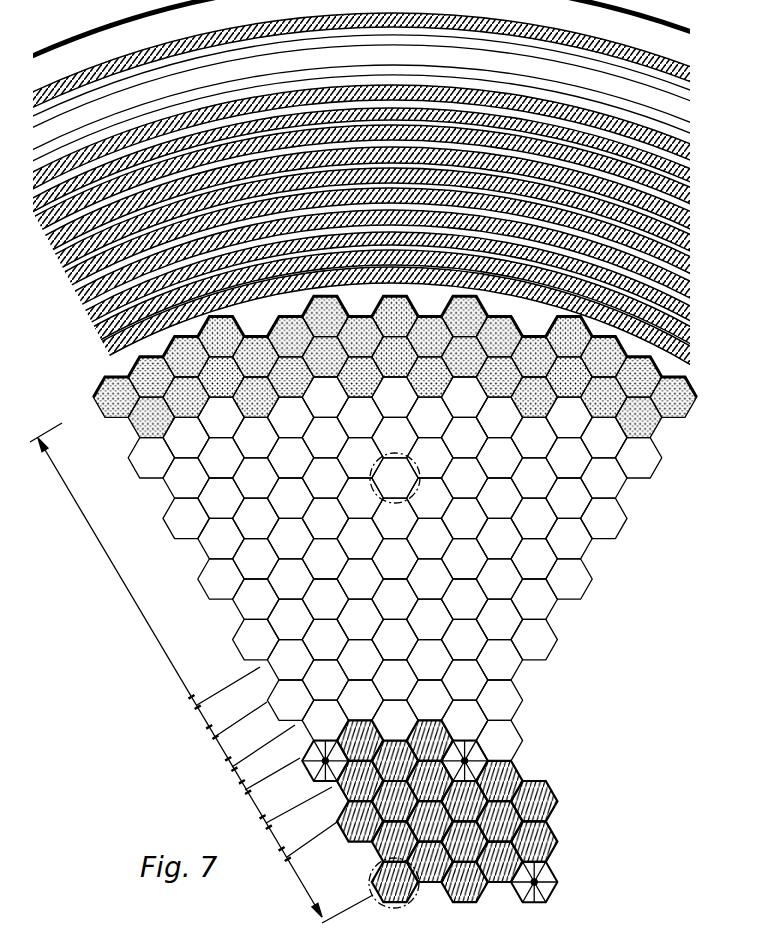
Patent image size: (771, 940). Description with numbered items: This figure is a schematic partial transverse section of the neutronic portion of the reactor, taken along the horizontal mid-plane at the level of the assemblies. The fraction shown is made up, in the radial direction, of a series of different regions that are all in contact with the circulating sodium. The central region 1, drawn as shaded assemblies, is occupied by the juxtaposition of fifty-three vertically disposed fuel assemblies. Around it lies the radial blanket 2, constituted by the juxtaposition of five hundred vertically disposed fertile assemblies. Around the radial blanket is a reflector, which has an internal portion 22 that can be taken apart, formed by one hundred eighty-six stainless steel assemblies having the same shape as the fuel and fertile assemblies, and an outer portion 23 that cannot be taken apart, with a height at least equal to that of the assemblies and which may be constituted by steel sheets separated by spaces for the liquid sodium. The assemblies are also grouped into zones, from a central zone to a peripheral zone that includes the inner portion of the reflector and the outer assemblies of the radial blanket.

The outer portion of the reflector 23 is at (116, 364).
The internal portion of the reflector 22 is at (67, 393).
The radial blanket 2 is at (290, 770).
The central region 1 is at (372, 903).